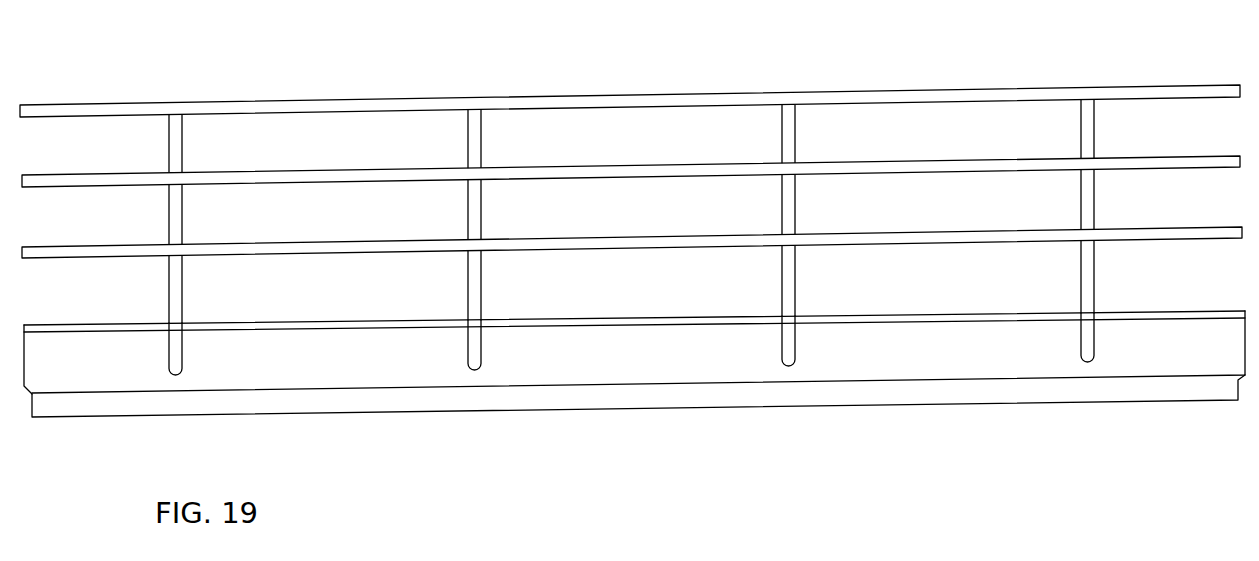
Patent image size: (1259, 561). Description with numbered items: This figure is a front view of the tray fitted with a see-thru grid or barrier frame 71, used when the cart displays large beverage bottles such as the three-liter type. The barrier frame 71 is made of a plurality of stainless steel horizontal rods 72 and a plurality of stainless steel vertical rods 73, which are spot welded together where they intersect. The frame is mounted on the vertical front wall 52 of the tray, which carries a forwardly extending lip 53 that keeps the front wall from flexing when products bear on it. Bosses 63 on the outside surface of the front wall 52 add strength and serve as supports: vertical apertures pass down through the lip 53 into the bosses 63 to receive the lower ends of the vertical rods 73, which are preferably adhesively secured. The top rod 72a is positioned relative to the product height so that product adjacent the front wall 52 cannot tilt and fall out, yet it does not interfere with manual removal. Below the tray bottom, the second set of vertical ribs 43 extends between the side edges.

The barrier frame 71 is at (682, 81).
The horizontal rods 72 is at (311, 104).
The top rod 72a is at (578, 95).
The vertical rods 73 is at (174, 147).
The lip 53 is at (97, 325).
The front wall 52 is at (285, 368).
The bosses 63 is at (170, 343).
The second set of vertical ribs 43 is at (673, 399).